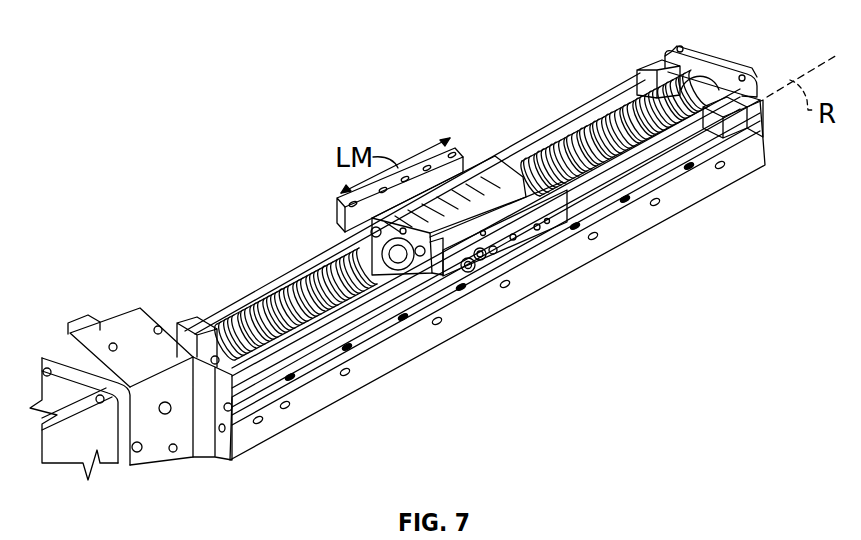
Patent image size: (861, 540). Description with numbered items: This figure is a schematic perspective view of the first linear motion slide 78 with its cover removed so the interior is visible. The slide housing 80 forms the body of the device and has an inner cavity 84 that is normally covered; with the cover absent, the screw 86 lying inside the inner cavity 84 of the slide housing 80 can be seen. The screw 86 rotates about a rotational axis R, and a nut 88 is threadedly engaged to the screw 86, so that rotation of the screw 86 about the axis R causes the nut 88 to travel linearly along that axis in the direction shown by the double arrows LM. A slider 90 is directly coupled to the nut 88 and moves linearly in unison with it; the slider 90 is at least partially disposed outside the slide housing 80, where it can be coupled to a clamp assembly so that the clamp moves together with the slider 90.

The first linear motion slide 78 is at (653, 42).
The slide housing 80 is at (662, 230).
The inner cavity 84 is at (333, 323).
The screw 86 is at (626, 120).
The nut 88 is at (370, 249).
The slider 90 is at (527, 237).